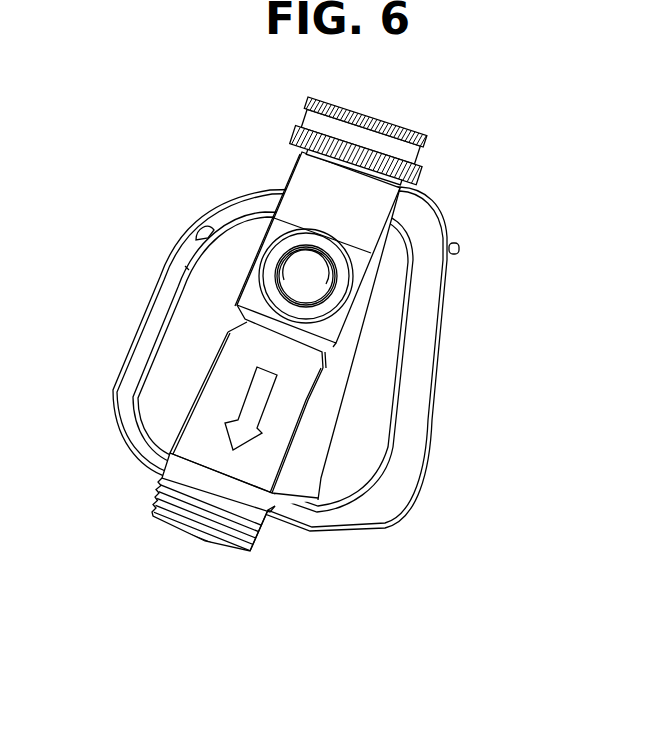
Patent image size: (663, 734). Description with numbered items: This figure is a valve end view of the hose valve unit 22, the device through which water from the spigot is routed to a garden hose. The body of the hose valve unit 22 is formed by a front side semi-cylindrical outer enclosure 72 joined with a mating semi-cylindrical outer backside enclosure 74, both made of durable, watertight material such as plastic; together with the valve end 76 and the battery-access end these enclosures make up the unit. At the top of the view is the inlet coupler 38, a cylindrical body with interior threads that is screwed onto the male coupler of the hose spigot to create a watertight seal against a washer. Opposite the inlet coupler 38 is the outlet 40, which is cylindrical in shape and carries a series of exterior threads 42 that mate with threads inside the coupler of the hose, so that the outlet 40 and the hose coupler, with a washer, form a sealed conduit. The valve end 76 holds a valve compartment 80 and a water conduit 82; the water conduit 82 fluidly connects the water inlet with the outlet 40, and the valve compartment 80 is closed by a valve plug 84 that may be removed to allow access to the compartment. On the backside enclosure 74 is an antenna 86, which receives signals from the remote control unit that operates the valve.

The hose valve unit 22 is at (287, 118).
The inlet coupler 38 is at (393, 145).
The outlet 40 is at (198, 537).
The exterior threads 42 is at (260, 542).
The front side semi-cylindrical outer enclosure 72 is at (160, 278).
The semi-cylindrical outer backside enclosure 74 is at (432, 345).
The valve end 76 is at (385, 455).
The valve compartment 80 is at (278, 232).
The water conduit 82 is at (272, 465).
The valve plug 84 is at (288, 273).
The antenna 86 is at (452, 243).